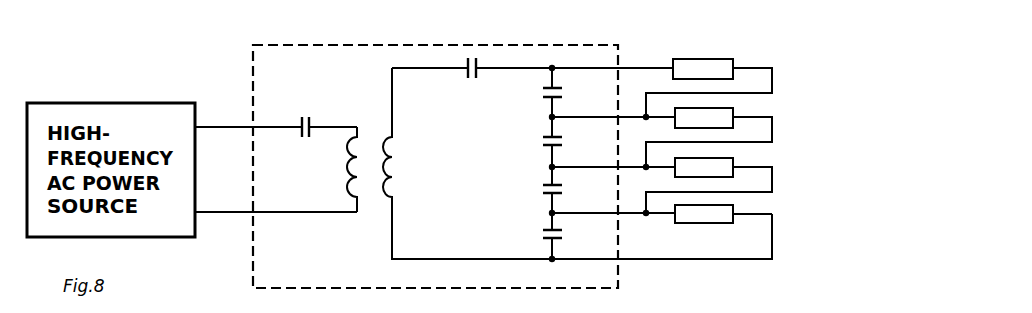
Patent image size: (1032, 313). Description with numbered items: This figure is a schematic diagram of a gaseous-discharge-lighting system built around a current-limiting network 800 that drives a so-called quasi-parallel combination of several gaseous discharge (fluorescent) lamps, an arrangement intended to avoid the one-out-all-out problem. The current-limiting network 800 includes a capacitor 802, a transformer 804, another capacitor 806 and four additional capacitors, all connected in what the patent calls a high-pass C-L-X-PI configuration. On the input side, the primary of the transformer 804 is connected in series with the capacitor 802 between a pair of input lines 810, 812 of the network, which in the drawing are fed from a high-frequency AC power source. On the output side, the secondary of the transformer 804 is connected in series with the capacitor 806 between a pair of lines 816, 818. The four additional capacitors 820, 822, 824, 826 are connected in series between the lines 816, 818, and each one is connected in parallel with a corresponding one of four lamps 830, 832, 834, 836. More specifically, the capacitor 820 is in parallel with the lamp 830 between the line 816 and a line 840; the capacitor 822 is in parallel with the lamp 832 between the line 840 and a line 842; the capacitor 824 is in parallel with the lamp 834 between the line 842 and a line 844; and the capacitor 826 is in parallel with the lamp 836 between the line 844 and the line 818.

The current-limiting network 800 is at (517, 45).
The capacitor 802 is at (303, 118).
The transformer 804 is at (350, 167).
The capacitor 806 is at (470, 80).
The input line 810 is at (239, 124).
The input line 812 is at (239, 207).
The line 816 is at (660, 68).
The line 818 is at (723, 260).
The capacitor 820 is at (543, 94).
The capacitor 822 is at (543, 139).
The capacitor 824 is at (543, 186).
The capacitor 826 is at (543, 232).
The lamp 830 is at (728, 46).
The lamp 832 is at (733, 108).
The lamp 834 is at (733, 158).
The lamp 836 is at (725, 224).
The line 840 is at (772, 74).
The line 842 is at (772, 130).
The line 844 is at (772, 180).